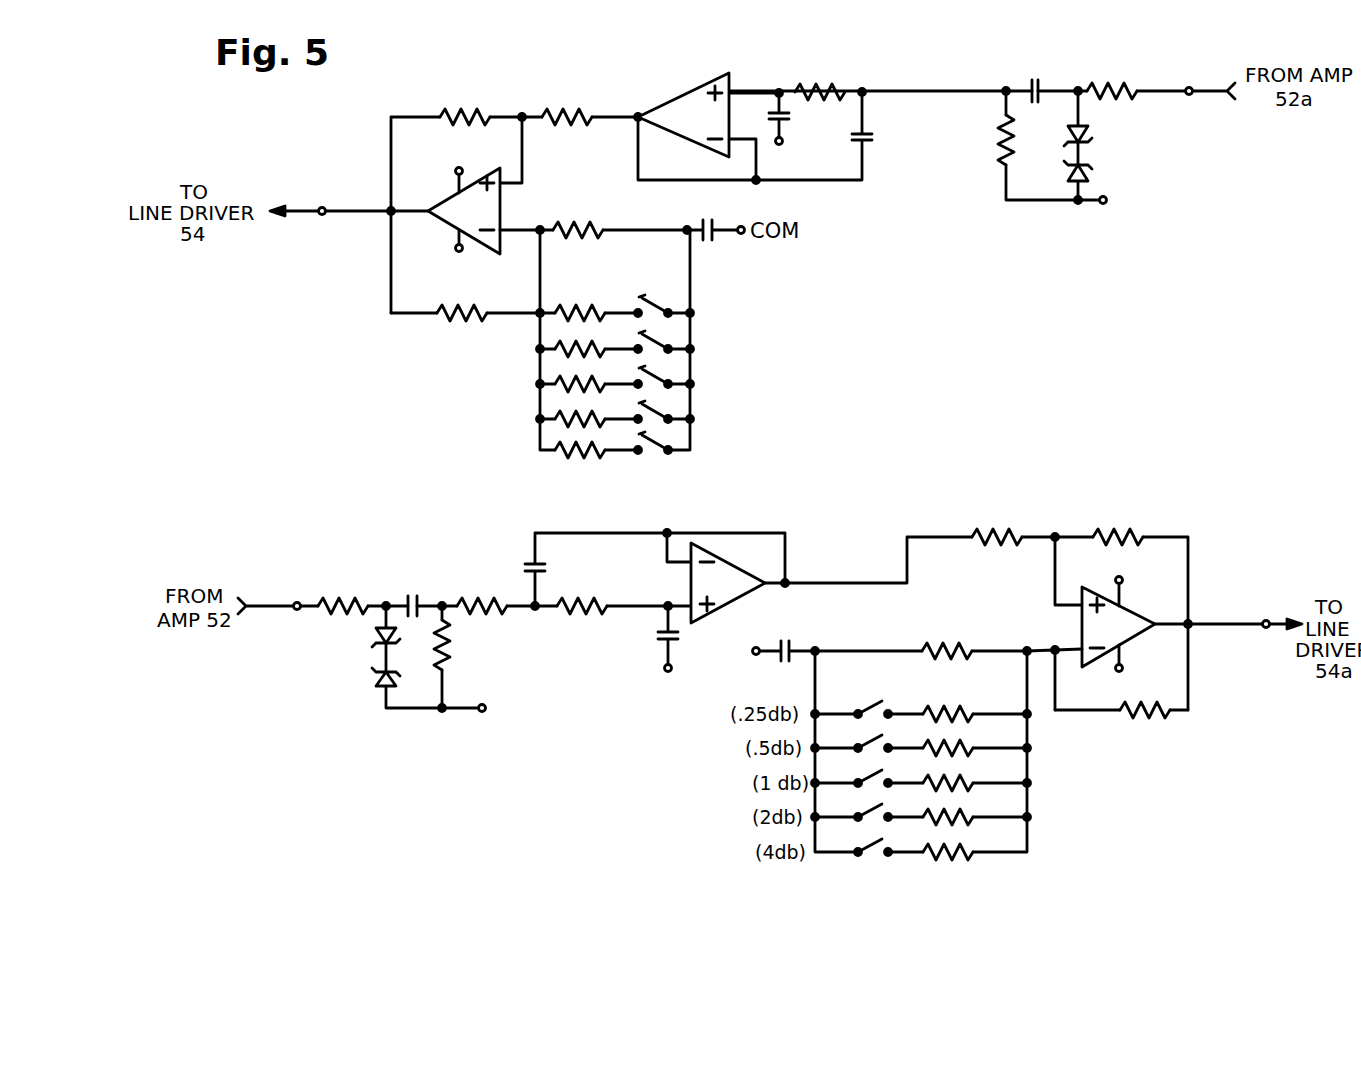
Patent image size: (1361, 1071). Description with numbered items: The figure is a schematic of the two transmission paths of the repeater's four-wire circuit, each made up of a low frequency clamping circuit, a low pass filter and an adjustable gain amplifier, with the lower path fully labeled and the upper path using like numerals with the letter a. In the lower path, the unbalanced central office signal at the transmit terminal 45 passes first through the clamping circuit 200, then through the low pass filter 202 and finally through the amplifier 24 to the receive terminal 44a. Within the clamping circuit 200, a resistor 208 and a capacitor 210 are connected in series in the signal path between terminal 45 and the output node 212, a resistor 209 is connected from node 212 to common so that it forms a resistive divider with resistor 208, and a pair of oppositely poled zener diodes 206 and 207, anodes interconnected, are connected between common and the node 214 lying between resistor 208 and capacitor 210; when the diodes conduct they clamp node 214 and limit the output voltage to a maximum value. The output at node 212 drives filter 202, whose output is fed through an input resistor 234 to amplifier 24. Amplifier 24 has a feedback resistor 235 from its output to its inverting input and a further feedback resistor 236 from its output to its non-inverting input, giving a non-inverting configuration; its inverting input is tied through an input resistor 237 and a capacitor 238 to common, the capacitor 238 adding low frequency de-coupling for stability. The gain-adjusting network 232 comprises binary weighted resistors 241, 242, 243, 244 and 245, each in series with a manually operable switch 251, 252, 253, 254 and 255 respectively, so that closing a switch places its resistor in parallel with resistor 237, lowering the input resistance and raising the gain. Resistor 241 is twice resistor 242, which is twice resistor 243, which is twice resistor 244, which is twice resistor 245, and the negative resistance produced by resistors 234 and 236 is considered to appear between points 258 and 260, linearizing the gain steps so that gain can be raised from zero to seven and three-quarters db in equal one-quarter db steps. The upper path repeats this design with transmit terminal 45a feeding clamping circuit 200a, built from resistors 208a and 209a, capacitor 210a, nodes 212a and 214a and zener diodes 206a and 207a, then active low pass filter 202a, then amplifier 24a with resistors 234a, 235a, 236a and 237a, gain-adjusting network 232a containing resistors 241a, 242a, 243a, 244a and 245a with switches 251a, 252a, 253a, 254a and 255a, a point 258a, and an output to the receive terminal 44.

The amplifier 24 is at (1125, 600).
The amplifier 24a is at (430, 222).
The receive terminal 44 is at (322, 207).
The receive terminal 44a is at (1266, 620).
The transmit terminal 45 is at (297, 602).
The transmit terminal 45a is at (1190, 95).
The low frequency clamping circuit 200 is at (457, 720).
The low frequency clamping circuit 200a is at (1003, 202).
The low pass filter 202 is at (630, 635).
The active low pass filter 202a is at (828, 185).
The zener diode 206 is at (375, 641).
The zener diode 206a is at (1091, 135).
The zener diode 207 is at (375, 680).
The zener diode 207a is at (1090, 169).
The resistor 208 is at (345, 600).
The resistor 208a is at (1125, 88).
The resistor 209 is at (450, 662).
The resistor 209a is at (1000, 140).
The capacitor 210 is at (411, 594).
The capacitor 210a is at (1034, 78).
The node 212 is at (443, 602).
The node 212a is at (1004, 88).
The node 214 is at (386, 602).
The node 214a is at (1078, 87).
The gain-adjusting network 232 is at (1032, 803).
The gain-adjusting network 232a is at (527, 385).
The input resistor 234 is at (1010, 520).
The input resistor 234a is at (567, 112).
The feedback resistor 235 is at (1168, 712).
The feedback resistor 235a is at (452, 322).
The feedback resistor 236 is at (1135, 520).
The feedback resistor 236a is at (463, 112).
The input resistor 237 is at (958, 640).
The input resistor 237a is at (592, 226).
The capacitor 238 is at (792, 648).
The binary weighted resistor 241 is at (963, 708).
The binary weighted resistor 241a is at (585, 308).
The binary weighted resistor 242 is at (968, 745).
The binary weighted resistor 242a is at (565, 347).
The binary weighted resistor 243 is at (968, 780).
The binary weighted resistor 243a is at (565, 384).
The binary weighted resistor 244 is at (968, 814).
The binary weighted resistor 244a is at (560, 419).
The binary weighted resistor 245 is at (968, 850).
The binary weighted resistor 245a is at (560, 452).
The manually operable switch 251 is at (874, 703).
The manually operable switch 251a is at (668, 312).
The manually operable switch 252 is at (872, 738).
The manually operable switch 252a is at (672, 350).
The manually operable switch 253 is at (872, 773).
The manually operable switch 253a is at (672, 384).
The manually operable switch 254 is at (872, 808).
The manually operable switch 254a is at (672, 418).
The manually operable switch 255 is at (872, 843).
The manually operable switch 255a is at (672, 450).
The circuit point 258 is at (1025, 645).
The circuit point 258a is at (541, 226).
The circuit point 260 is at (1055, 645).